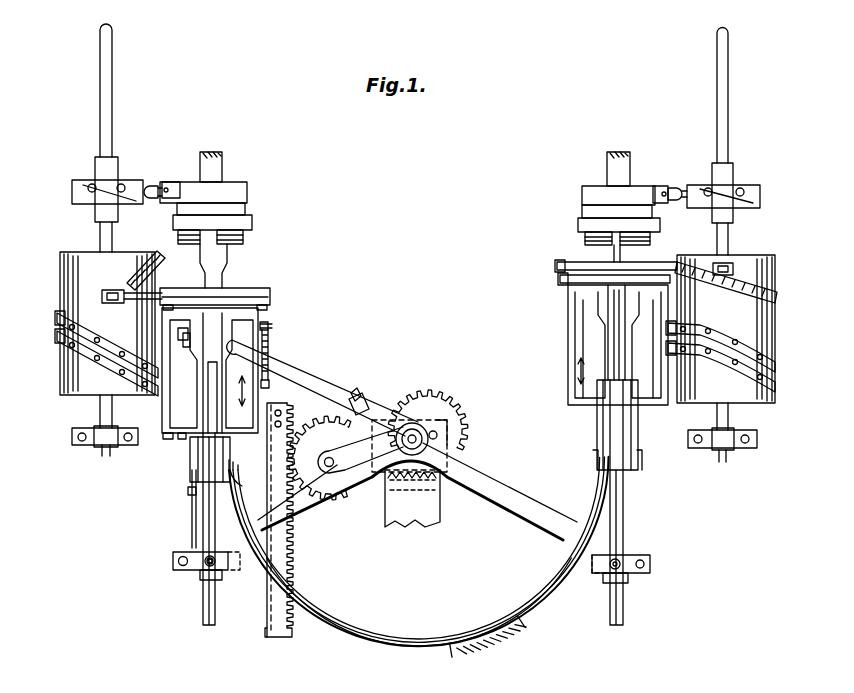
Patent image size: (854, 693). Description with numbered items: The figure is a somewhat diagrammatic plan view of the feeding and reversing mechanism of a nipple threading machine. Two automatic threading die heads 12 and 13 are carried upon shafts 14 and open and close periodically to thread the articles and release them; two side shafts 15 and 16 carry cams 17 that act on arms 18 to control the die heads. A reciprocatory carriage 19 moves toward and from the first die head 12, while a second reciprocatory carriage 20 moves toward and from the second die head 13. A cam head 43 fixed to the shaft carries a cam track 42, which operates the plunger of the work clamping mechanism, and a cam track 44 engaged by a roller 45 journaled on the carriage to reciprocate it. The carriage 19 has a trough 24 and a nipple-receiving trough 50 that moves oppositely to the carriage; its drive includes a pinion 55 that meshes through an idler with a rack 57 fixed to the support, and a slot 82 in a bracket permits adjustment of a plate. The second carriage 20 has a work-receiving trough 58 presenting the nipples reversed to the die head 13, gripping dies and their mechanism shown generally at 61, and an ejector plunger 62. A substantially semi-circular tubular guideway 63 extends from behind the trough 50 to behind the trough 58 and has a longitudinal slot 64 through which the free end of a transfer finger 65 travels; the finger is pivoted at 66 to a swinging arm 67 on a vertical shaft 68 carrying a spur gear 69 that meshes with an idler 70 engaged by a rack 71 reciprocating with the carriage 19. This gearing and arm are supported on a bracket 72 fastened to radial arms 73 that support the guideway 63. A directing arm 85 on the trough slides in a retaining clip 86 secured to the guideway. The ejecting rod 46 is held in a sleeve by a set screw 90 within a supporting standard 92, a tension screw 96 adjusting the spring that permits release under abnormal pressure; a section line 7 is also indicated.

The section line 7- 7 is at (615, 248).
The threading die head 12 is at (247, 206).
The threading die head 13 is at (580, 211).
The shaft 14 is at (222, 165).
The side shaft 15 is at (100, 116).
The side shaft 16 is at (728, 130).
The cam 17 is at (72, 191).
The arm 18 is at (156, 185).
The reciprocatory carriage 19 is at (194, 412).
The reciprocatory carriage 20 is at (577, 337).
The trough 24 is at (232, 373).
The cam track 42 is at (160, 262).
The cam head 43 is at (72, 286).
The cam track 44 is at (57, 336).
The roller 45 is at (170, 385).
The ejecting rod 46 is at (212, 457).
The nipple-receiving trough 50 is at (195, 449).
The pinion 55 is at (270, 332).
The rack 57 is at (269, 386).
The work-receiving trough 58 is at (632, 372).
The gripping dies and operating mechanism 61 is at (565, 270).
The ejector plunger 62 is at (612, 418).
The tubular guideway 63 is at (364, 632).
The longitudinal slot 64 is at (492, 603).
The transfer finger 65 is at (313, 382).
The pivot 66 is at (355, 392).
The swinging arm 67 is at (364, 395).
The vertical shaft 68 is at (414, 434).
The spur gear 69 is at (460, 424).
The idler 70 is at (322, 432).
The rack 71 is at (281, 446).
The bracket 72 is at (440, 511).
The radial arm 73 is at (314, 508).
The slot 82 is at (181, 352).
The directing arm 85 is at (192, 527).
The retaining clip 86 is at (188, 491).
The set screw 90 is at (215, 578).
The supporting standard 92 is at (173, 559).
The tension screw 96 is at (205, 572).